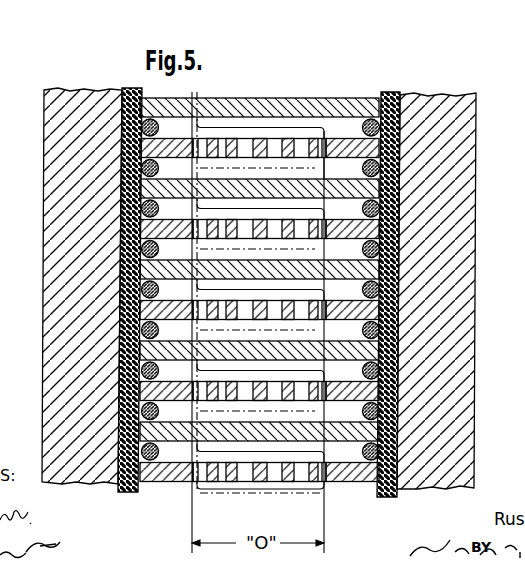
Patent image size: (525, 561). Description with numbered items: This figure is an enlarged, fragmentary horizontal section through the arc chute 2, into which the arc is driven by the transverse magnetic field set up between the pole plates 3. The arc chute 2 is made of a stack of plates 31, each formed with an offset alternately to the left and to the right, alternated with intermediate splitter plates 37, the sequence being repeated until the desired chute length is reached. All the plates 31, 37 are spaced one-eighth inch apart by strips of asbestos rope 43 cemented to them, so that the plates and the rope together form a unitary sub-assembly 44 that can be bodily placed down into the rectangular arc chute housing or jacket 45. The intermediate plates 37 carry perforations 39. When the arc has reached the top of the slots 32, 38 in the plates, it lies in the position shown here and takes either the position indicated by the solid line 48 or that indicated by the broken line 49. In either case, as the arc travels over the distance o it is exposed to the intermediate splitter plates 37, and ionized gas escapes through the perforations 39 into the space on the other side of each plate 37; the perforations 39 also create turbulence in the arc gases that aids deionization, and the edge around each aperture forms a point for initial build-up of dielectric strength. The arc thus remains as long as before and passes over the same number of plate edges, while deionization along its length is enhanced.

The arc chute 2 is at (260, 277).
The pole plates 3 is at (44, 206).
The plate 31 is at (328, 288).
The slot 32 is at (327, 220).
The intermediate splitter plate 37 is at (326, 329).
The slot 38 is at (326, 172).
The perforations 39 is at (273, 380).
The asbestos rope 43 is at (368, 373).
The unitary sub-assembly 44 is at (355, 516).
The arc chute housing or jacket 45 is at (386, 92).
The solid line 48 is at (326, 127).
The broken line 49 is at (200, 172).